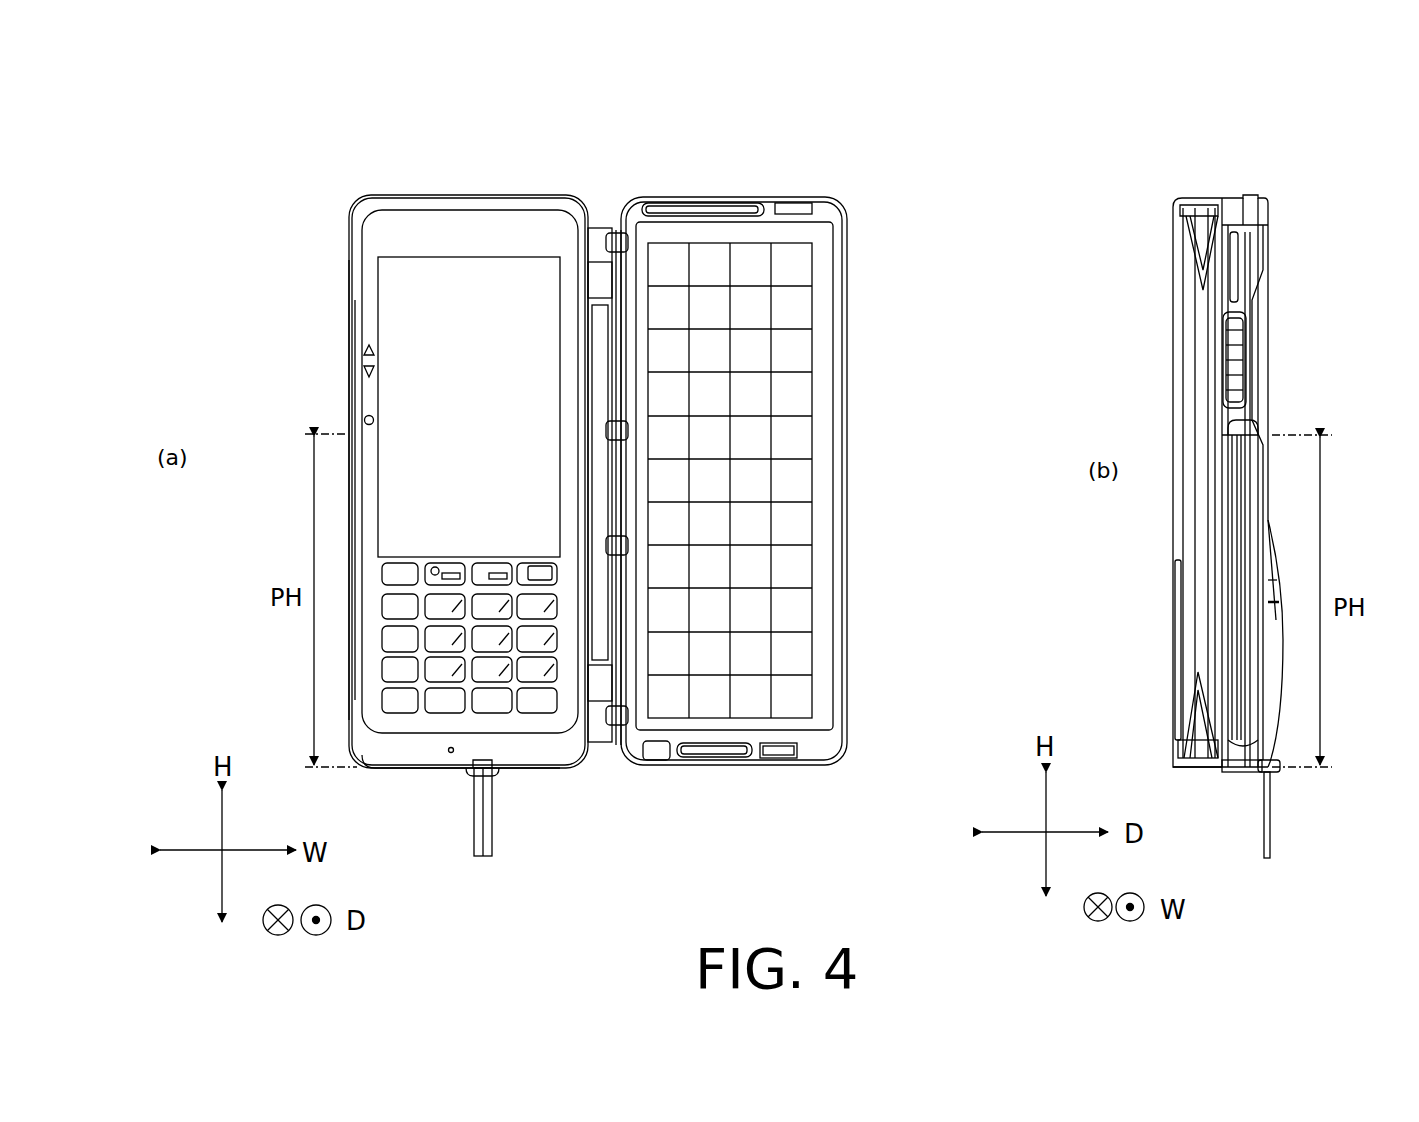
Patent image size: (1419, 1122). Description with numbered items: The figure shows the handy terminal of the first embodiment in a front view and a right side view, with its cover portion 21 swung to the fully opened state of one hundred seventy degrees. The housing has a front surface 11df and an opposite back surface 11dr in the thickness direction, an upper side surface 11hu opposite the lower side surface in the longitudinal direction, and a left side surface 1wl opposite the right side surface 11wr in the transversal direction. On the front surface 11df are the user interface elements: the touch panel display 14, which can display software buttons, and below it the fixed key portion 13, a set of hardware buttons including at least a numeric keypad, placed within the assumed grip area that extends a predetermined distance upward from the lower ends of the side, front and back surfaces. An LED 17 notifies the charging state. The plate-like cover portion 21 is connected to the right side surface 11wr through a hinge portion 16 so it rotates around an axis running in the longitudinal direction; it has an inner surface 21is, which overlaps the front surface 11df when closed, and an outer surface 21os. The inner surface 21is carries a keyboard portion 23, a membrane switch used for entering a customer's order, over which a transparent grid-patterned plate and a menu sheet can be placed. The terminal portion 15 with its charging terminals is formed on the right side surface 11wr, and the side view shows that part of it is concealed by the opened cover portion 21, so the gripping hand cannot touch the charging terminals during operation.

The front surface 11df is at (400, 232).
The left side wall 1wl is at (350, 300).
The touch panel display 14 is at (450, 383).
The fixed key portion 13 is at (435, 710).
The LED 17 is at (500, 770).
The hinge portion 16 is at (600, 232).
The cover portion 21 is at (748, 195).
The inner surface 21is is at (800, 232).
The keyboard portion 23 is at (795, 437).
The upper side surface 11hu is at (1232, 200).
The right side surface 11wr is at (1240, 262).
The back surface 11dr is at (1266, 274).
The terminal portion 15 is at (1240, 362).
The outer surface 21os is at (1262, 428).